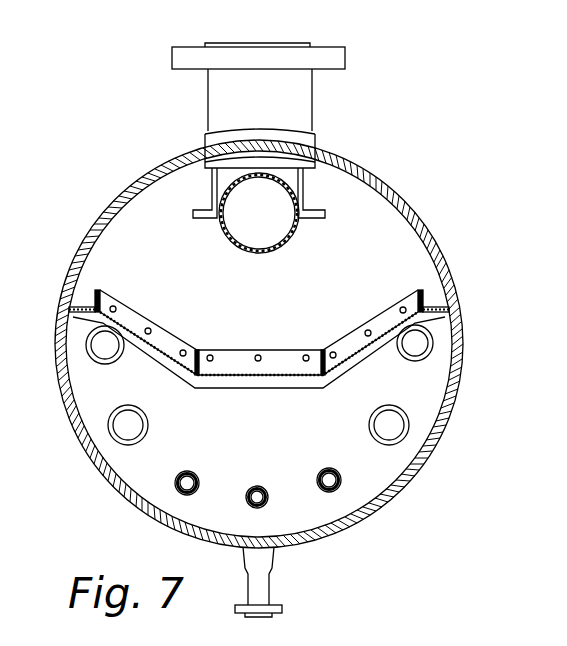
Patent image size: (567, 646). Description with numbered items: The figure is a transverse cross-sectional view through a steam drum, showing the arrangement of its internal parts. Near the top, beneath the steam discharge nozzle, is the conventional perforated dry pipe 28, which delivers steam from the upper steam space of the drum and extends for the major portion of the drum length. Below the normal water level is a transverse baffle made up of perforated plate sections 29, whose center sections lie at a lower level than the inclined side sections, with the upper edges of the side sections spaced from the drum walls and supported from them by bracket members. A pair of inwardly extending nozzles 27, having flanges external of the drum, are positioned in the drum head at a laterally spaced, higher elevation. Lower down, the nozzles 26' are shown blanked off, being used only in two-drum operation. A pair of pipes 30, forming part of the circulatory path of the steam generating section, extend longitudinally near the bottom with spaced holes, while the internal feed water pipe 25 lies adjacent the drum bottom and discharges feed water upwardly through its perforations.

The internal feed water pipe 25 is at (265, 489).
The nozzles 26' is at (315, 425).
The inwardly extending nozzles 27 is at (418, 340).
The perforated dry pipe 28 is at (288, 240).
The perforated plate sections 29 is at (220, 372).
The pipes 30 is at (198, 474).